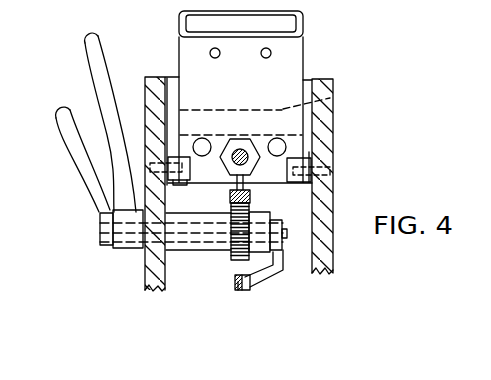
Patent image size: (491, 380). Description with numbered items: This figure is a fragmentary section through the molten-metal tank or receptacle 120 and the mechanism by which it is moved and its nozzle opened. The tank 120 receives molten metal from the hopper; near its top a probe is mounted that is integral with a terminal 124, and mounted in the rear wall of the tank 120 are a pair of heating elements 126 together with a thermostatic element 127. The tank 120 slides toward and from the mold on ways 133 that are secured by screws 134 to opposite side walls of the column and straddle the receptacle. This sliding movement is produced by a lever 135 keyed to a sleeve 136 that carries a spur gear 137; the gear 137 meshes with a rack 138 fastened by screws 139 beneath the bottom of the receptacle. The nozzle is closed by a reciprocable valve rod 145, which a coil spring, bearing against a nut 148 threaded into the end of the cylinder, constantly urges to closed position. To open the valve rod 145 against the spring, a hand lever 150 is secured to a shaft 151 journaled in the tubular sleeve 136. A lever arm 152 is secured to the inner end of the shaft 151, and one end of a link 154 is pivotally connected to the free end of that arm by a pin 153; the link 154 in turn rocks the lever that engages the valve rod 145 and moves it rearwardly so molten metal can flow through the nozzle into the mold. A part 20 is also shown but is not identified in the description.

The wall panel 20 is at (333, 253).
The tank 120 is at (295, 53).
The terminal 124 is at (215, 58).
The heating elements 126 is at (203, 156).
The thermostatic element 127 is at (330, 98).
The ways 133 is at (184, 181).
The screws 134 is at (331, 174).
The lever 135 is at (87, 51).
The sleeve 136 is at (185, 242).
The spur gear 137 is at (232, 258).
The rack 138 is at (251, 197).
The screws 139 is at (229, 192).
The valve rod 145 is at (247, 152).
The nut 148 is at (230, 139).
The hand lever 150 is at (73, 130).
The shaft 151 is at (103, 238).
The lever arm 152 is at (275, 270).
The pin 153 is at (237, 282).
The link 154 is at (238, 290).